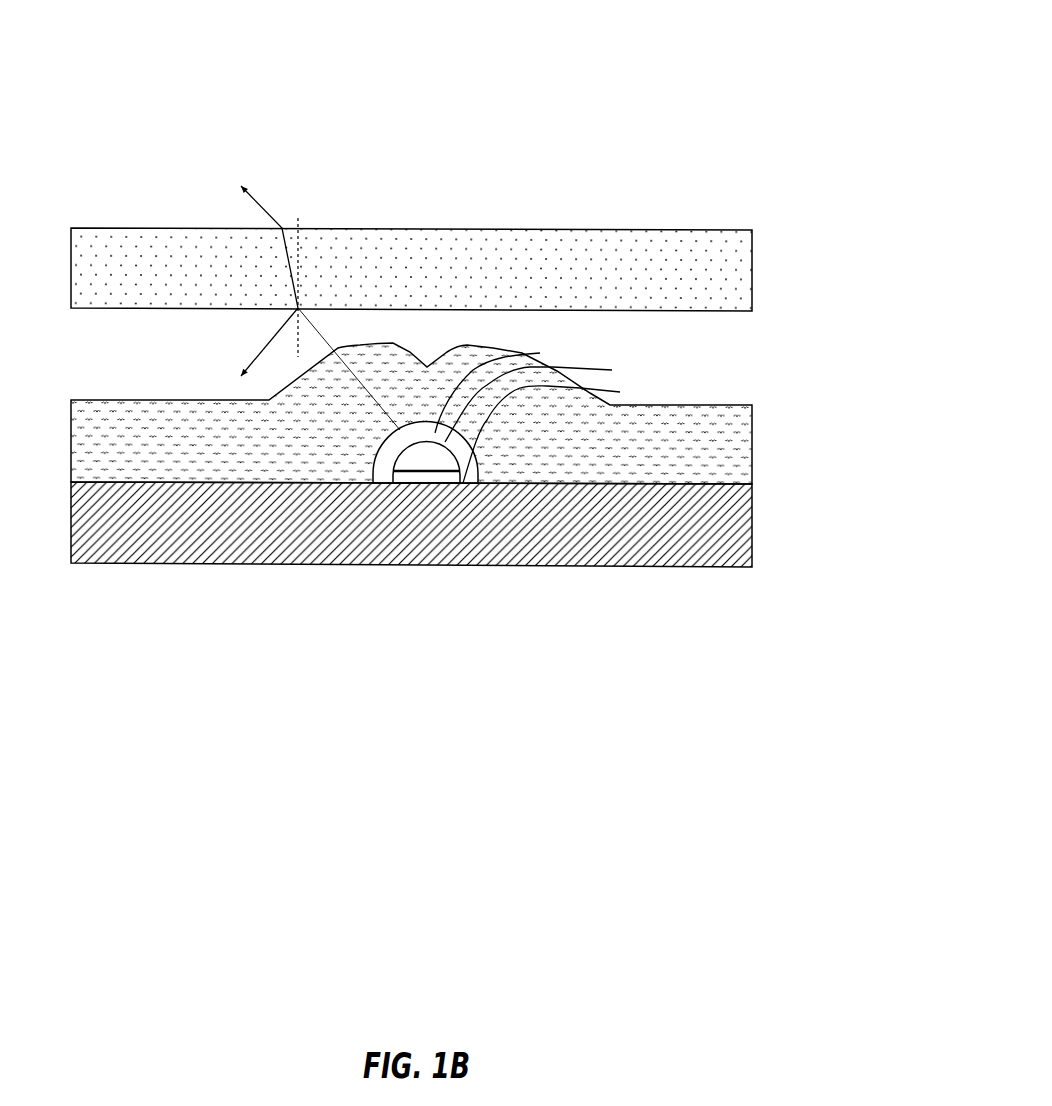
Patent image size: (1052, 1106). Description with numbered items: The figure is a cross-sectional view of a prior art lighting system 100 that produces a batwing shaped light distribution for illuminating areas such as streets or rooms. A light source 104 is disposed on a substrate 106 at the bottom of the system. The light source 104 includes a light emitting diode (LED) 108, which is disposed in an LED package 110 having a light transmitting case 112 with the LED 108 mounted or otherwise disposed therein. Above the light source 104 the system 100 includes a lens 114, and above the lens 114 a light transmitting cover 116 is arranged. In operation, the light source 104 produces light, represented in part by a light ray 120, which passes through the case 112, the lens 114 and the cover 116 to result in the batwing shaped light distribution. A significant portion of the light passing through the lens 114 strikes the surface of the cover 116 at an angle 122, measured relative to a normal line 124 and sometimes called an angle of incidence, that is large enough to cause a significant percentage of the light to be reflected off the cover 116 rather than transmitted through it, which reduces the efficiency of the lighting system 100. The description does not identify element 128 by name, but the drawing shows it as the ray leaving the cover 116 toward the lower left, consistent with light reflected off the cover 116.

The lighting system 100 is at (690, 67).
The light source 104 is at (475, 413).
The substrate 106 is at (71, 531).
The light emitting diode (LED) 108 is at (460, 471).
The LED package 110 is at (518, 420).
The case 112 is at (557, 431).
The lens 114 is at (71, 430).
The light transmitting cover 116 is at (71, 299).
The light ray 120 is at (263, 188).
The angle 122 is at (322, 334).
The normal line 124 is at (299, 219).
The reflected light 128 is at (243, 373).